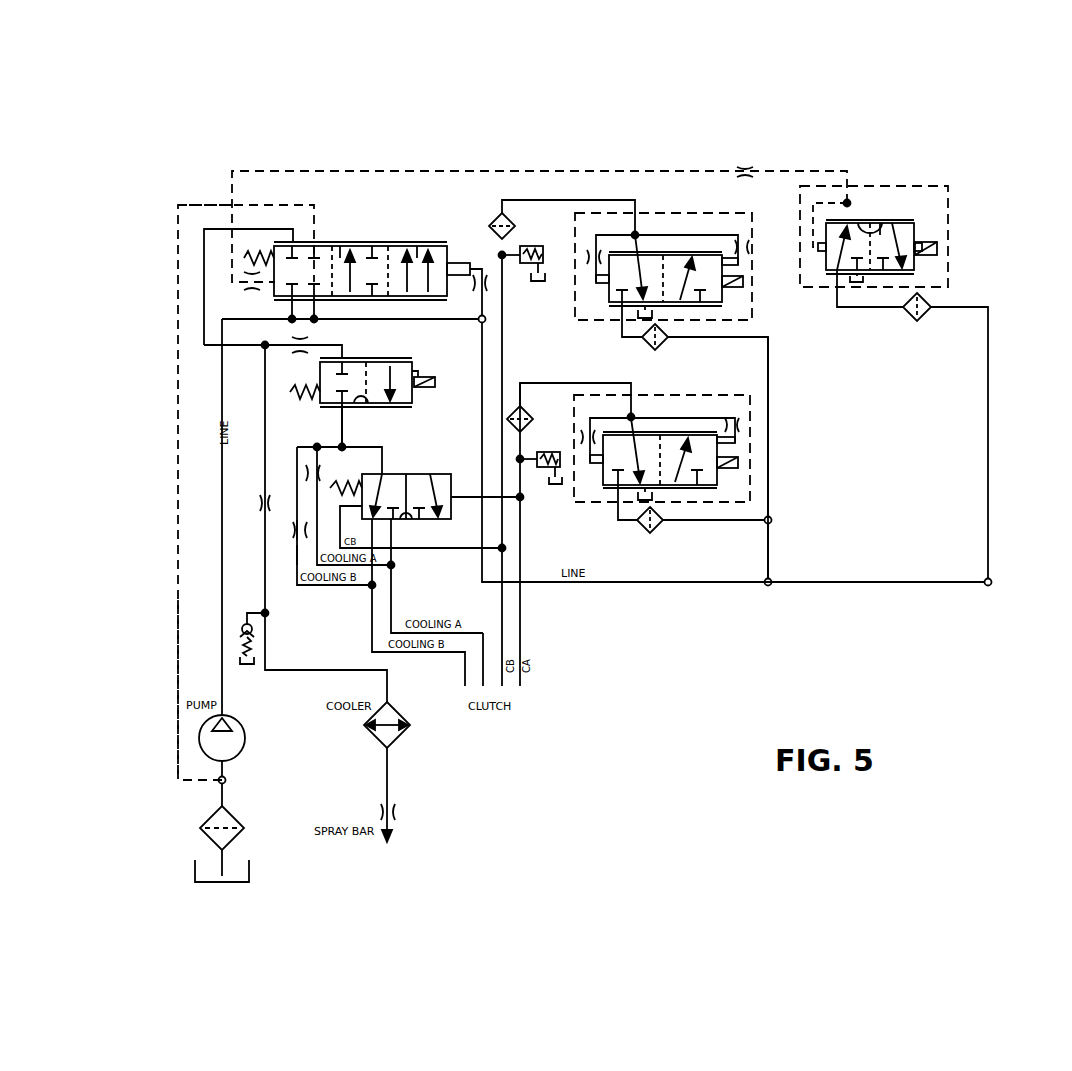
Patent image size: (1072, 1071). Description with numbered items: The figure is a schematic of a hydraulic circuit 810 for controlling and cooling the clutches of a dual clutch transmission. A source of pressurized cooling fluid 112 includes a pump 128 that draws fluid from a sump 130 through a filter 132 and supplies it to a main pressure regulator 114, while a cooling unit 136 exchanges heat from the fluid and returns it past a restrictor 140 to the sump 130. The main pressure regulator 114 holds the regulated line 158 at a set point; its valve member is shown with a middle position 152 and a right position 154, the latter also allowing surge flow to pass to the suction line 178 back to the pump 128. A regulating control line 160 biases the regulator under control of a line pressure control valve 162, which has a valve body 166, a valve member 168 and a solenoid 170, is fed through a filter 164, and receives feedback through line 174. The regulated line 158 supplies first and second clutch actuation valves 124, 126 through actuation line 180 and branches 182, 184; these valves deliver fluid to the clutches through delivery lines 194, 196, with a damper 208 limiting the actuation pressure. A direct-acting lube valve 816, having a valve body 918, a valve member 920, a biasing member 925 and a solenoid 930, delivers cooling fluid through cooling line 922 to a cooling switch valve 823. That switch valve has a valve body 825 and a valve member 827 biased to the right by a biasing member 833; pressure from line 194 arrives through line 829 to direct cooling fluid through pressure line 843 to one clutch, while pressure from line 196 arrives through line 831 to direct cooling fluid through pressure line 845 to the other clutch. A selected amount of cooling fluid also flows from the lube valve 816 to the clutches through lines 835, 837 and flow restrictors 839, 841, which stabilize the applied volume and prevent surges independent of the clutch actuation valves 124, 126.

The hydraulic circuit 810 is at (158, 184).
The regulating control line 160 is at (268, 173).
The main pressure regulator 114 is at (384, 212).
The middle position 152 is at (338, 246).
The right position 154 is at (417, 246).
The damper 208 is at (522, 246).
The delivery line 196 is at (594, 200).
The second clutch actuation valve 126 is at (675, 205).
The feedback line 174 is at (828, 203).
The valve body 166 is at (886, 223).
The valve member 168 is at (917, 235).
The line pressure control valve 162 is at (965, 229).
The solenoid 170 is at (936, 258).
The filter 164 is at (930, 303).
The suction line 178 is at (178, 342).
The biasing member 925 is at (290, 392).
The lube valve 816 is at (363, 358).
The valve member 920 is at (416, 372).
The solenoid 930 is at (440, 382).
The delivery line 194 is at (550, 383).
The biasing member 833 is at (333, 487).
The valve body 918 is at (364, 406).
The cooling line 922 is at (344, 430).
The cooling switch valve 823 is at (430, 465).
The valve body 825 is at (408, 517).
The line 829 is at (514, 499).
The valve member 827 is at (506, 549).
The line 831 is at (398, 565).
The pressure line 843 is at (393, 608).
The pressure line 845 is at (372, 618).
The flow restrictor 839 is at (306, 475).
The line 835 is at (298, 508).
The flow restrictor 841 is at (298, 530).
The line 837 is at (298, 555).
The first clutch actuation valve 124 is at (762, 444).
The branch 184 is at (768, 480).
The actuation line 180 is at (768, 550).
The branch 182 is at (730, 523).
The regulated line 158 is at (652, 582).
The source of pressurized cooling fluid 112 is at (138, 756).
The pump 128 is at (245, 738).
The filter 132 is at (200, 824).
The sump 130 is at (222, 882).
The cooling unit 136 is at (400, 738).
The restrictor 140 is at (396, 815).